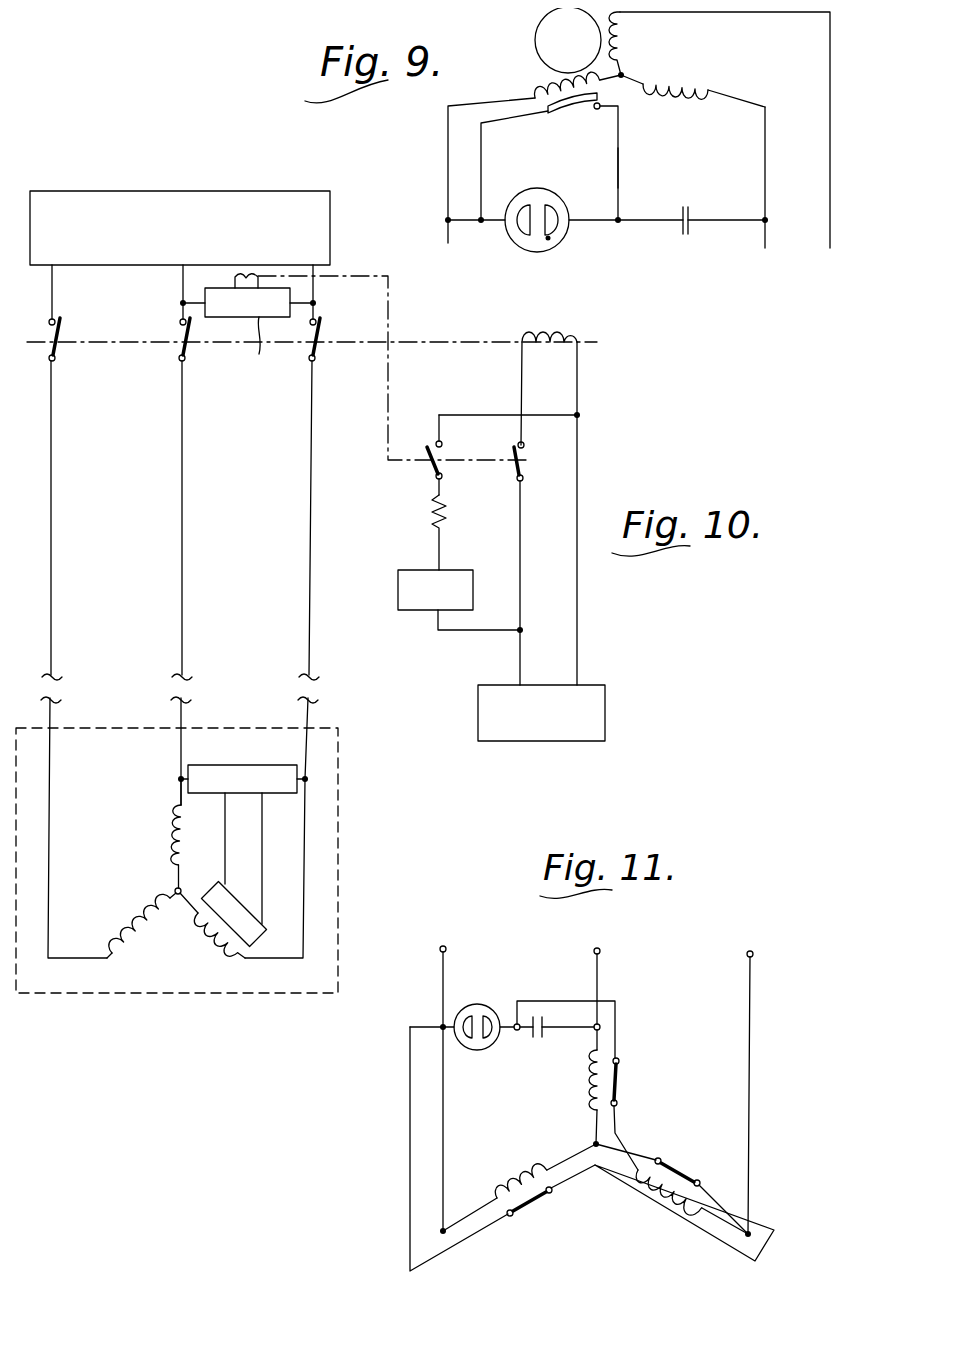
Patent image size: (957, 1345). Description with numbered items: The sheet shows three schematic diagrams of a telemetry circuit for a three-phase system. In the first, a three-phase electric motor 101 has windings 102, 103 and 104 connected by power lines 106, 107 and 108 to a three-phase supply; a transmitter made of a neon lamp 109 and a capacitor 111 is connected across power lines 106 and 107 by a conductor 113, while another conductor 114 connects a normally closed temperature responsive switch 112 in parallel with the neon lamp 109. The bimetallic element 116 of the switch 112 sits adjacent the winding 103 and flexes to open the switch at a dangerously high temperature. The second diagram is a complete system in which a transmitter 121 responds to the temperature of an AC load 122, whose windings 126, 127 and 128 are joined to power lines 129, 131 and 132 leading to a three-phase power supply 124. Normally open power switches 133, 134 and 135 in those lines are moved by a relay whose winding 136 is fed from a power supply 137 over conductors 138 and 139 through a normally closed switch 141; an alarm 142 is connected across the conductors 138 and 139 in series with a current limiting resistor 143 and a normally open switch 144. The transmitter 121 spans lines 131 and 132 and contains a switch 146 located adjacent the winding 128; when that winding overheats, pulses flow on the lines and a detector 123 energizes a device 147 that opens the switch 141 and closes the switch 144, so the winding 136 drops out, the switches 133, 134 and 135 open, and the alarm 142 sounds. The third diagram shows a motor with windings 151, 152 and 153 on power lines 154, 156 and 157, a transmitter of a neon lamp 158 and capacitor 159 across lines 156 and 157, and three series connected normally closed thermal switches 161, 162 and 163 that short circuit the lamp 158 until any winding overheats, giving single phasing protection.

In FIG. 9, the three-phase electric motor 101 is at (532, 34).
In FIG. 9, the three-phase winding 102 is at (627, 42).
In FIG. 9, the three-phase winding 103 is at (543, 90).
In FIG. 9, the three-phase winding 104 is at (697, 89).
In FIG. 9, the power line 106 is at (448, 126).
In FIG. 9, the power line 107 is at (790, 142).
In FIG. 9, the power line 108 is at (830, 152).
In FIG. 9, the neon lamp 109 is at (562, 236).
In FIG. 9, the capacitor 111 is at (691, 218).
In FIG. 9, the temperature responsive electrical switch 112 is at (578, 120).
In FIG. 9, the conductor 113 is at (659, 228).
In FIG. 9, the conductor 114 is at (618, 188).
In FIG. 9, the bimetallic temperature responsive element 116 is at (562, 118).
In FIG. 10, the transmitter 121 is at (210, 768).
In FIG. 10, the AC load 122 is at (340, 878).
In FIG. 10, the detector 123 is at (248, 336).
In FIG. 10, the three-phase power supply 124 is at (180, 193).
In FIG. 10, the winding 126 is at (172, 832).
In FIG. 10, the winding 127 is at (136, 928).
In FIG. 10, the winding 128 is at (218, 940).
In FIG. 10, the power line 129 is at (52, 620).
In FIG. 10, the power line 131 is at (182, 620).
In FIG. 10, the power line 132 is at (309, 620).
In FIG. 10, the power switch 133 is at (62, 331).
In FIG. 10, the power switch 134 is at (191, 332).
In FIG. 10, the power switch 135 is at (321, 332).
In FIG. 10, the relay winding 136 is at (549, 341).
In FIG. 10, the power supply 137 is at (606, 712).
In FIG. 10, the conductor 138 is at (522, 577).
In FIG. 10, the conductor 139 is at (578, 597).
In FIG. 10, the normally closed switch 141 is at (520, 463).
In FIG. 10, the alarm 142 is at (421, 614).
In FIG. 10, the current limiting resistor 143 is at (446, 522).
In FIG. 10, the normally open switch 144 is at (429, 474).
In FIG. 10, the switch 146 is at (266, 942).
In FIG. 10, the device 147 is at (233, 276).
In FIG. 11, the winding 151 is at (668, 1195).
In FIG. 11, the winding 152 is at (520, 1185).
In FIG. 11, the winding 153 is at (590, 1078).
In FIG. 11, the power line 154 is at (751, 1104).
In FIG. 11, the power line 156 is at (600, 982).
In FIG. 11, the power line 157 is at (440, 979).
In FIG. 11, the neon lamp 158 is at (484, 1005).
In FIG. 11, the capacitor 159 is at (537, 1044).
In FIG. 11, the thermal switch 161 is at (675, 1170).
In FIG. 11, the thermal switch 162 is at (537, 1212).
In FIG. 11, the thermal switch 163 is at (620, 1086).